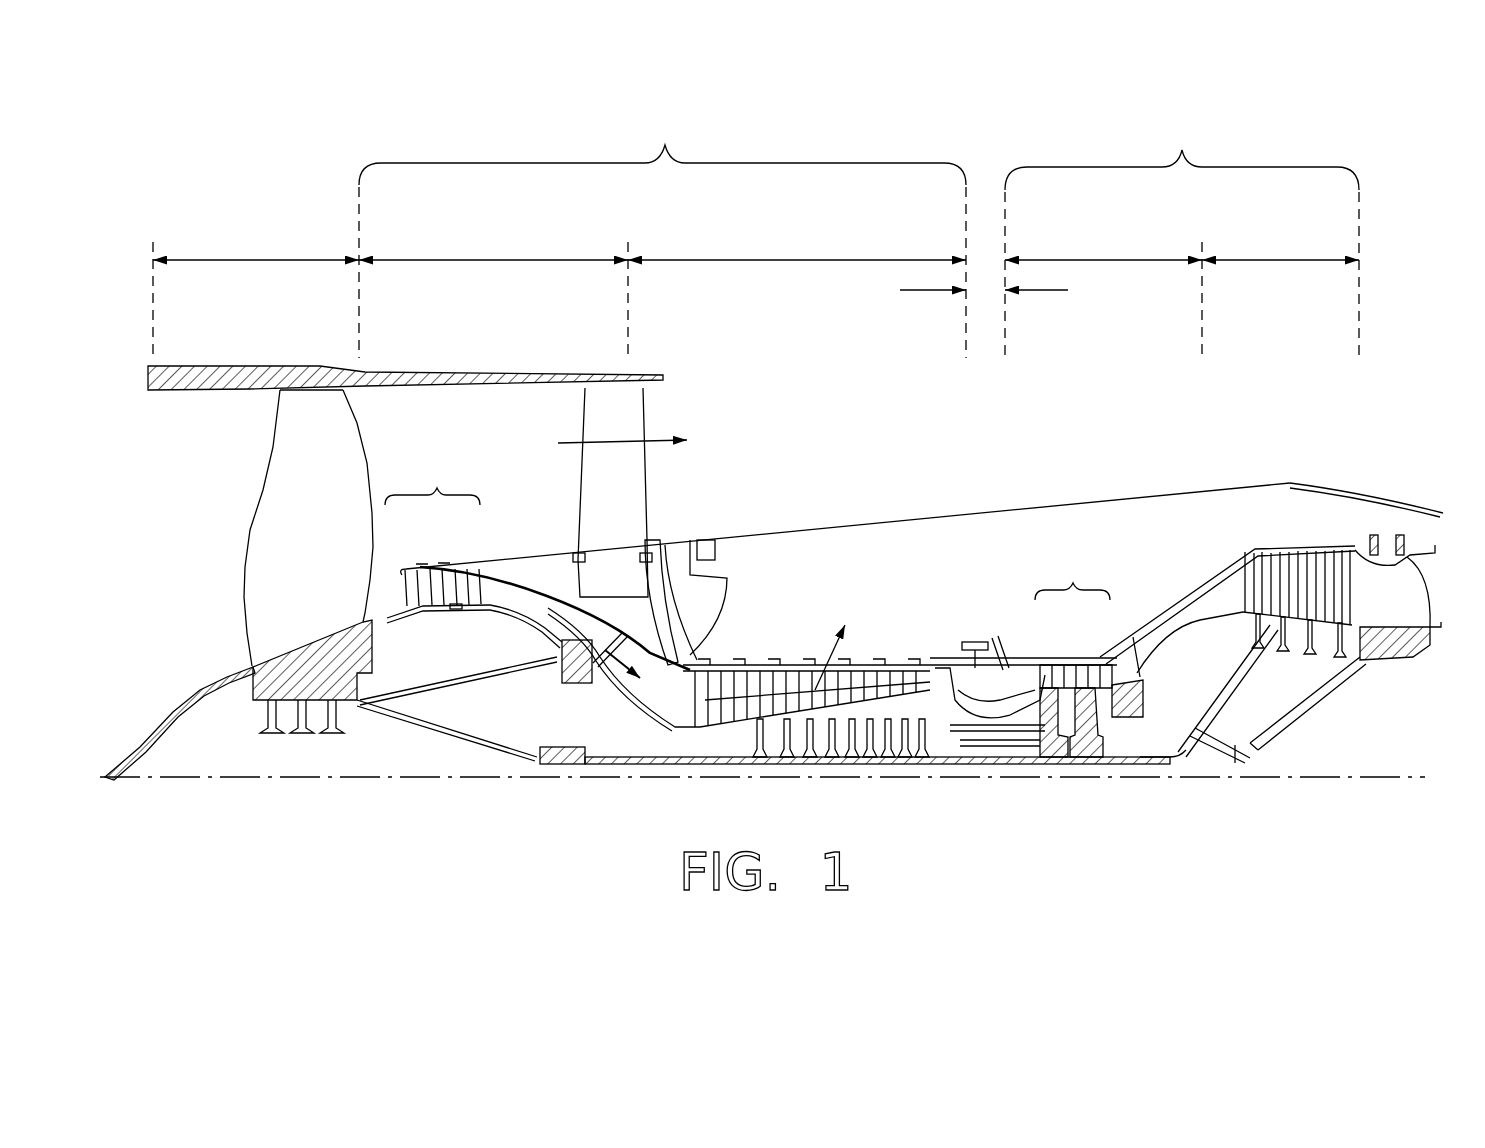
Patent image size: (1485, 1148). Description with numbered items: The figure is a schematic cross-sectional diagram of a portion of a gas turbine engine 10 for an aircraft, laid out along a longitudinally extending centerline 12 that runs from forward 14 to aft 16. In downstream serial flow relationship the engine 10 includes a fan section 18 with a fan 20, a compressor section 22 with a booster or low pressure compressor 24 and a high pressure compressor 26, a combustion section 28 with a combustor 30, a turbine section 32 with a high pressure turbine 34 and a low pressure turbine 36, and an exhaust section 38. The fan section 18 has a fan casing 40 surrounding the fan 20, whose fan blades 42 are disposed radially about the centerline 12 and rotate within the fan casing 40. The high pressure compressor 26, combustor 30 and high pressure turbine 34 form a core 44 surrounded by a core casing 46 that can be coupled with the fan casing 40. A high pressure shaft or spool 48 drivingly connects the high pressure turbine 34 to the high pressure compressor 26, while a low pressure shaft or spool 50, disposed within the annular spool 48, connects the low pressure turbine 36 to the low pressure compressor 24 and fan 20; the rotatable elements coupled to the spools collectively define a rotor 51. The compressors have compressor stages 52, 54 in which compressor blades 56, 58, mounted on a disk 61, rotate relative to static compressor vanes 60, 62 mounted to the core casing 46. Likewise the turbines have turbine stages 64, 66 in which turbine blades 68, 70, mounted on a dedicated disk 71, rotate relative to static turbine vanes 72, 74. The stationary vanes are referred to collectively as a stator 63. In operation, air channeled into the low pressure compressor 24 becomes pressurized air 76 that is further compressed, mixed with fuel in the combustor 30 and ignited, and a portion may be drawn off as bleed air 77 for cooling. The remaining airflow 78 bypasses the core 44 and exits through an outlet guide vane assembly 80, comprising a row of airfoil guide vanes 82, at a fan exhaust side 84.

The gas turbine engine 10 is at (1372, 290).
The centerline 12 is at (242, 777).
The forward 14 is at (154, 503).
The aft 16 is at (1431, 596).
The fan section 18 is at (255, 260).
The fan 20 is at (230, 623).
The compressor section 22 is at (665, 145).
The low pressure compressor 24 is at (500, 260).
The high pressure compressor 26 is at (800, 260).
The combustion section 28 is at (913, 290).
The combustor 30 is at (1000, 642).
The turbine section 32 is at (1182, 150).
The high pressure turbine 34 is at (1105, 260).
The low pressure turbine 36 is at (1278, 260).
The exhaust section 38 is at (1420, 572).
The fan casing 40 is at (393, 366).
The fan blades 42 is at (330, 430).
The core 44 is at (925, 545).
The core casing 46 is at (1183, 585).
The HP shaft or spool 48 is at (975, 740).
The LP shaft or spool 50 is at (560, 764).
The rotor 51 is at (1150, 712).
The compressor stages 52 is at (437, 488).
The compressor stages 54 is at (730, 625).
The compressor blades 56 is at (433, 578).
The compressor blades 58 is at (712, 665).
The static compressor vanes 60 is at (421, 575).
The disk 61 is at (456, 610).
The static compressor vanes 62 is at (710, 605).
The stator 63 is at (699, 730).
The turbine stages 64 is at (1073, 583).
The turbine stages 66 is at (1338, 487).
The turbine blades 68 is at (1063, 650).
The turbine blades 70 is at (1340, 550).
The disk 71 is at (1075, 740).
The static turbine vanes 72 is at (1047, 665).
The static turbine vanes 74 is at (1320, 555).
The pressurized air 76 is at (594, 680).
The bleed air 77 is at (826, 660).
The airflow 78 is at (558, 443).
The outlet guide vane assembly 80 is at (658, 500).
The airfoil guide vanes 82 is at (590, 478).
The fan exhaust side 84 is at (665, 407).